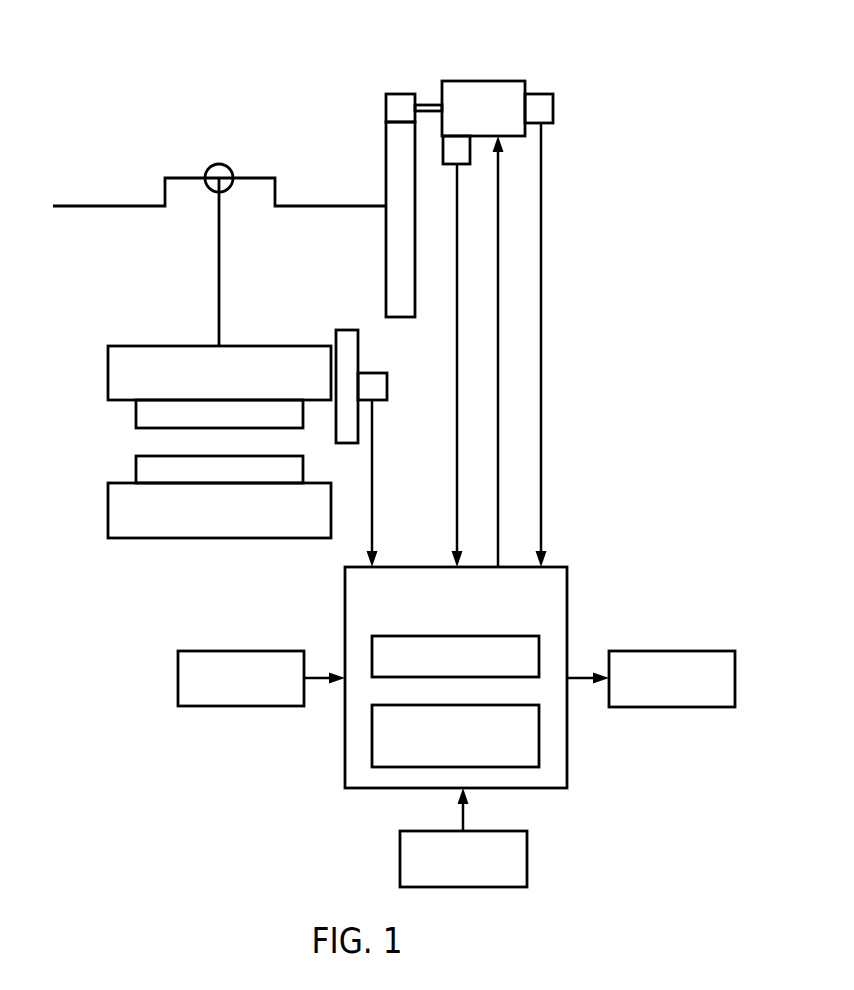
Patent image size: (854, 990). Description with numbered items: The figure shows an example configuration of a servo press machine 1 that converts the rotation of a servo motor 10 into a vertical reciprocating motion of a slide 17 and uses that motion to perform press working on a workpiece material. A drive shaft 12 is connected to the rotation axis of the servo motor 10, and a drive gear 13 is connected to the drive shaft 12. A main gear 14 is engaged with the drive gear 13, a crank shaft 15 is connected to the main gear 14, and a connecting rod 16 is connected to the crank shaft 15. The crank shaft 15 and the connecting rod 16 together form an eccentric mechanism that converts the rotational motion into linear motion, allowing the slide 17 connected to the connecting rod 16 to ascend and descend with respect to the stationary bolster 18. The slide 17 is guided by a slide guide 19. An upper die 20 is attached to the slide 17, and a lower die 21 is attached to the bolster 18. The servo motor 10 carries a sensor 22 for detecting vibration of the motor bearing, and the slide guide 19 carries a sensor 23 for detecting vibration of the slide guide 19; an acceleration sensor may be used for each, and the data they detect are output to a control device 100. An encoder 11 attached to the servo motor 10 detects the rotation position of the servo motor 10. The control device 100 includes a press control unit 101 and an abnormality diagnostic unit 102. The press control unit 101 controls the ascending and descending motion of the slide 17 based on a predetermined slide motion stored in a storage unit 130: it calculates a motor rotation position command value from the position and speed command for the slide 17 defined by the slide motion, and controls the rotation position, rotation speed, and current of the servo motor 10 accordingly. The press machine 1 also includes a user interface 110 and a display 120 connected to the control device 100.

The press machine 1 is at (588, 70).
The servo motor 10 is at (502, 81).
The encoder 11 is at (538, 94).
The drive shaft 12 is at (425, 105).
The drive gear 13 is at (396, 94).
The main gear 14 is at (396, 317).
The crank shaft 15 is at (333, 206).
The connecting rod 16 is at (219, 300).
The slide 17 is at (165, 346).
The bolster 18 is at (183, 538).
The slide guide 19 is at (353, 330).
The upper die 20 is at (136, 416).
The lower die 21 is at (136, 464).
The sensor 22 is at (462, 164).
The sensor 23 is at (387, 388).
The control device 100 is at (557, 567).
The press control unit 101 is at (502, 636).
The abnormality diagnostic unit 102 is at (502, 705).
The user interface 110 is at (267, 651).
The display 120 is at (696, 651).
The storage unit 130 is at (485, 831).